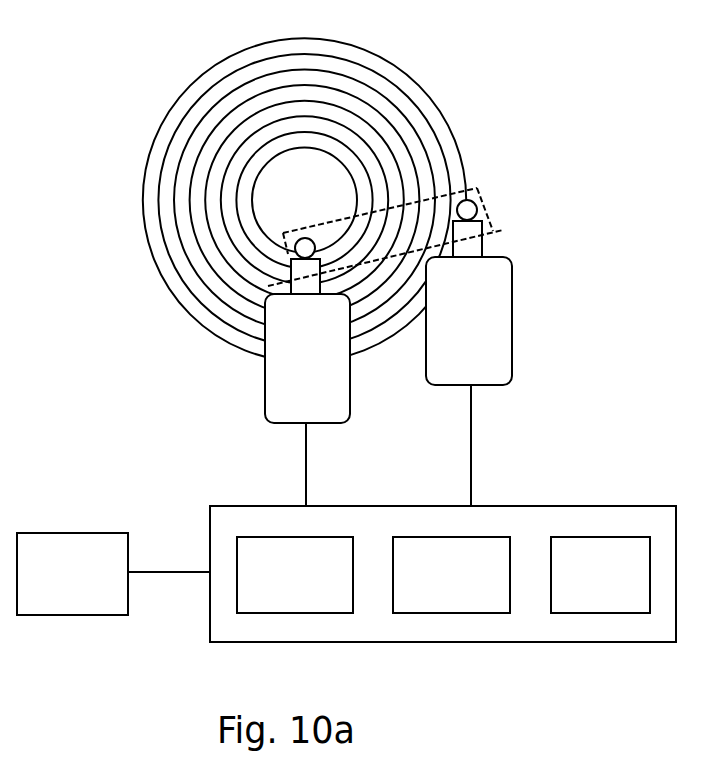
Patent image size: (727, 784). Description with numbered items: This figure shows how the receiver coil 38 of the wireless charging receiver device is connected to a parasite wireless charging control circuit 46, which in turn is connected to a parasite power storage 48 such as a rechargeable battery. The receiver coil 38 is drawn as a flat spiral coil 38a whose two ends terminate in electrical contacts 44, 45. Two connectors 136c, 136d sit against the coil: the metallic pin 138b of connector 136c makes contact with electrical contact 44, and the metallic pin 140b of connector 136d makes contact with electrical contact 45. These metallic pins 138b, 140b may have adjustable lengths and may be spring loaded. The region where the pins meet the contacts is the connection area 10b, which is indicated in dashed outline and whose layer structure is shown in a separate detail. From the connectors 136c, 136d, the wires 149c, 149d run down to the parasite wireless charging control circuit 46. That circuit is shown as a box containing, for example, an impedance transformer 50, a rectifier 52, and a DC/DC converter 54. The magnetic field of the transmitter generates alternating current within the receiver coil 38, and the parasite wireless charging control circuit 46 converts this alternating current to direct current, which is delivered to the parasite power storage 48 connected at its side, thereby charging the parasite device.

The connection area 10b is at (478, 183).
The receiver coil 38 is at (277, 199).
The flat spiral coil 38a is at (190, 88).
The electrical contact 44 is at (310, 237).
The electrical contact 45 is at (477, 203).
The parasite wireless charging control circuit 46 is at (443, 612).
The parasite power storage 48 is at (67, 615).
The impedance transformer 50 is at (295, 588).
The rectifier 52 is at (458, 598).
The DC/DC converter 54 is at (595, 598).
The connector 136c is at (264, 395).
The connector 136d is at (513, 327).
The metallic pin 138b is at (305, 272).
The metallic pin 140b is at (470, 245).
The wire 149c is at (306, 470).
The wire 149d is at (471, 463).